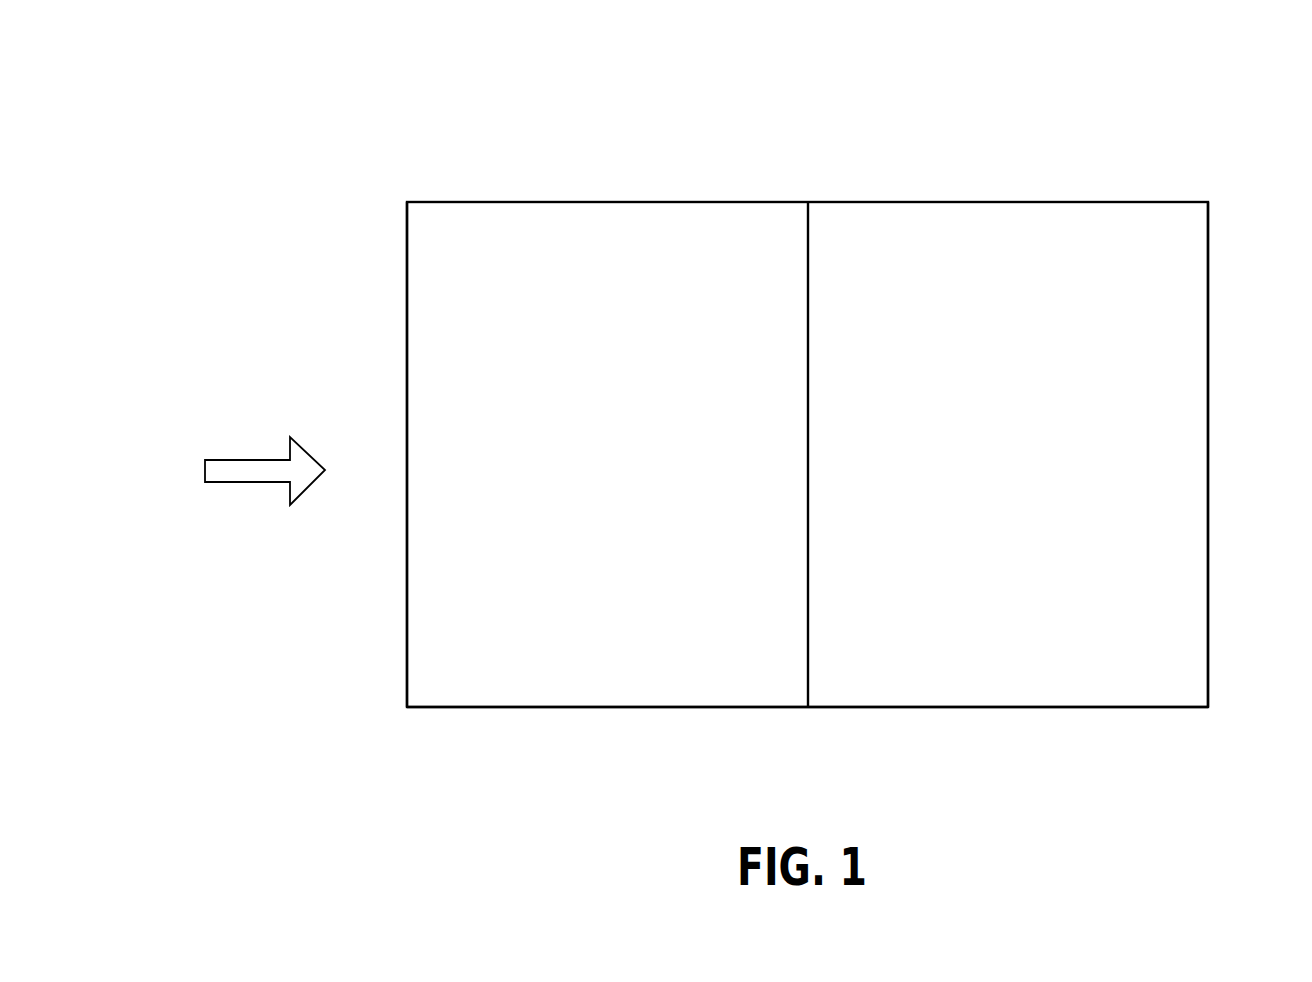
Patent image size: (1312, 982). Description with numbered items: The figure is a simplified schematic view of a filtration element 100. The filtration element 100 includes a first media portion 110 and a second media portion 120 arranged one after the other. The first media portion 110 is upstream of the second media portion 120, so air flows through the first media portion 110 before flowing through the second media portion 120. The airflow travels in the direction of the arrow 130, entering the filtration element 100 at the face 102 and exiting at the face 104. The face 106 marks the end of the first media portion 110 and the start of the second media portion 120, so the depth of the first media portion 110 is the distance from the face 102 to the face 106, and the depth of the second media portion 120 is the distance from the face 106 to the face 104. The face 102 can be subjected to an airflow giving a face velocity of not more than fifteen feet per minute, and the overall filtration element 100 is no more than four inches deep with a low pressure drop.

The filtration element 100 is at (1036, 118).
The face 102 is at (407, 643).
The face 104 is at (1208, 582).
The face 106 is at (808, 680).
The first media portion 110 is at (587, 688).
The second media portion 120 is at (1047, 688).
The arrow 130 is at (260, 460).